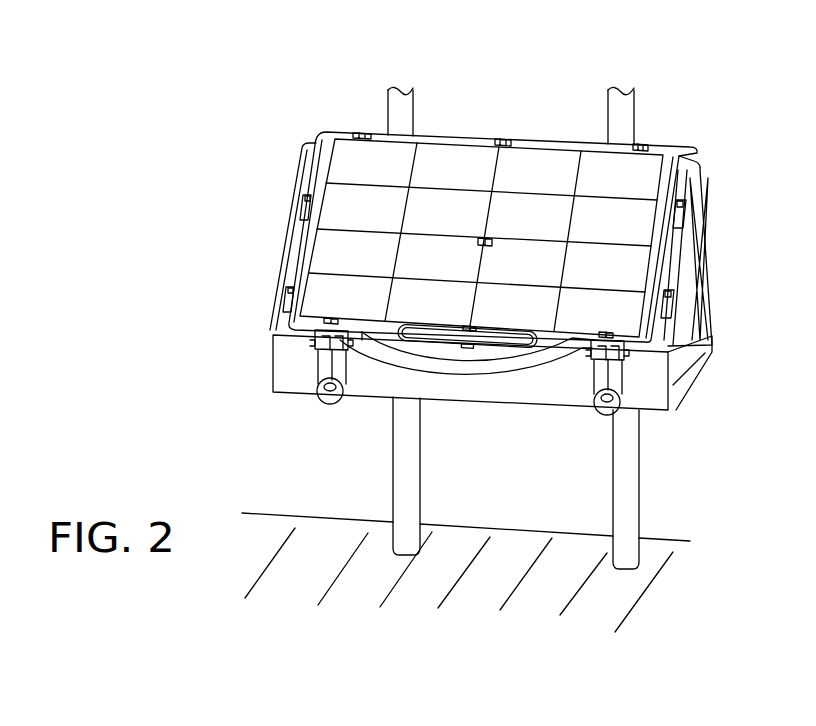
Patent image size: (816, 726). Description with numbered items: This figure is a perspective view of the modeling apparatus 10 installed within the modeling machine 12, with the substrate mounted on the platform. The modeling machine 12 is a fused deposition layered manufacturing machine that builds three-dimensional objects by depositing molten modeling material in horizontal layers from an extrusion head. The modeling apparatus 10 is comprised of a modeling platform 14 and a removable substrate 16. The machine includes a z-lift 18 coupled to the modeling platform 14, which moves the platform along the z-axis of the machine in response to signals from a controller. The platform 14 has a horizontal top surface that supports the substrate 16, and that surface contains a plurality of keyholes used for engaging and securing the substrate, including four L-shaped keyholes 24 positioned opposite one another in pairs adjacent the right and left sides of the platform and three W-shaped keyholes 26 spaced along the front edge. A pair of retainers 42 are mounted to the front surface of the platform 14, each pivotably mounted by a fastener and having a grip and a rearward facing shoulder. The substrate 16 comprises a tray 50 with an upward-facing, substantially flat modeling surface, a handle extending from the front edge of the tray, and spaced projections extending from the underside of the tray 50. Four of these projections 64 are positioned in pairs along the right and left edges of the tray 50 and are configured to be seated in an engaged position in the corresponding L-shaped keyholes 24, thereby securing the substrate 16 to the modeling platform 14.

The modeling apparatus 10 is at (268, 236).
The modeling machine 12 is at (355, 515).
The modeling platform 14 is at (296, 143).
The removable substrate 16 is at (528, 122).
The z-lift 18 is at (400, 108).
The L-shaped keyholes 24 is at (301, 210).
The W-shaped keyholes 26 is at (462, 352).
The retainers 42 is at (325, 395).
The tray 50 is at (345, 133).
The projections 64 is at (302, 186).